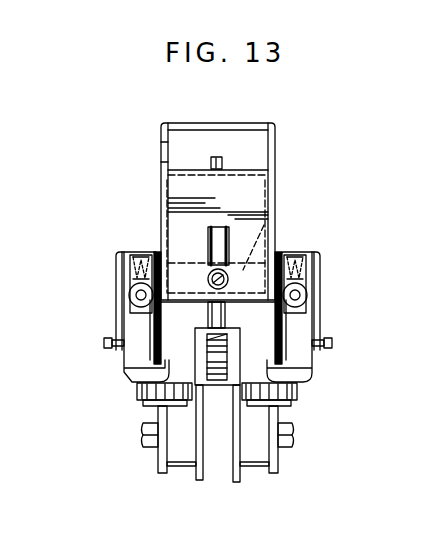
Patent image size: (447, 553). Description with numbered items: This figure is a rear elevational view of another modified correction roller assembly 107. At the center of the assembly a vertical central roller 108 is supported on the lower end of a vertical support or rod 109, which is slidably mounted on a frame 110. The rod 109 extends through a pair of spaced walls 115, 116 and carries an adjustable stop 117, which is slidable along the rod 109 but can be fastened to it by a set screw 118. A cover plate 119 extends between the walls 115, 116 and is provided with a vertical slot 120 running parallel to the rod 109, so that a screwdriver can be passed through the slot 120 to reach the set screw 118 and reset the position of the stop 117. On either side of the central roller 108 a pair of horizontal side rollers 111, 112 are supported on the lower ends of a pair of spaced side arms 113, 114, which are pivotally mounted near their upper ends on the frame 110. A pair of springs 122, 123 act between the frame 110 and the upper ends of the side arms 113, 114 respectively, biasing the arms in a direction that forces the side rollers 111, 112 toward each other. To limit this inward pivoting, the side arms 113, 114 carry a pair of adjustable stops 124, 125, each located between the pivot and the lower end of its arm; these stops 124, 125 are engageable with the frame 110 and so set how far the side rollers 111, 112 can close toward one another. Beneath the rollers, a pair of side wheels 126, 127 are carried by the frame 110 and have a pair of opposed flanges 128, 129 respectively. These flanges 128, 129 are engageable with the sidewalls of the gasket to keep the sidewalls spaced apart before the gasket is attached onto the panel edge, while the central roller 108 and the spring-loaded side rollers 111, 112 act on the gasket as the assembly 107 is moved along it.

The correction roller assembly 107 is at (118, 390).
The vertical central roller 108 is at (283, 330).
The vertical support or rod 109 is at (215, 157).
The frame 110 is at (276, 128).
The horizontal side roller 111 is at (300, 393).
The horizontal side roller 112 is at (137, 390).
The side arm 113 is at (302, 368).
The side arm 114 is at (123, 362).
The wall 115 is at (190, 170).
The wall 116 is at (187, 310).
The adjustable stop 117 is at (269, 221).
The set screw 118 is at (208, 279).
The cover plate 119 is at (258, 191).
The vertical slot 120 is at (208, 237).
The spring 122 is at (280, 250).
The spring 123 is at (157, 252).
The adjustable stop 124 is at (332, 343).
The adjustable stop 125 is at (106, 346).
The side wheel 126 is at (256, 450).
The side wheel 127 is at (172, 450).
The flange 128 is at (233, 475).
The flange 129 is at (195, 473).